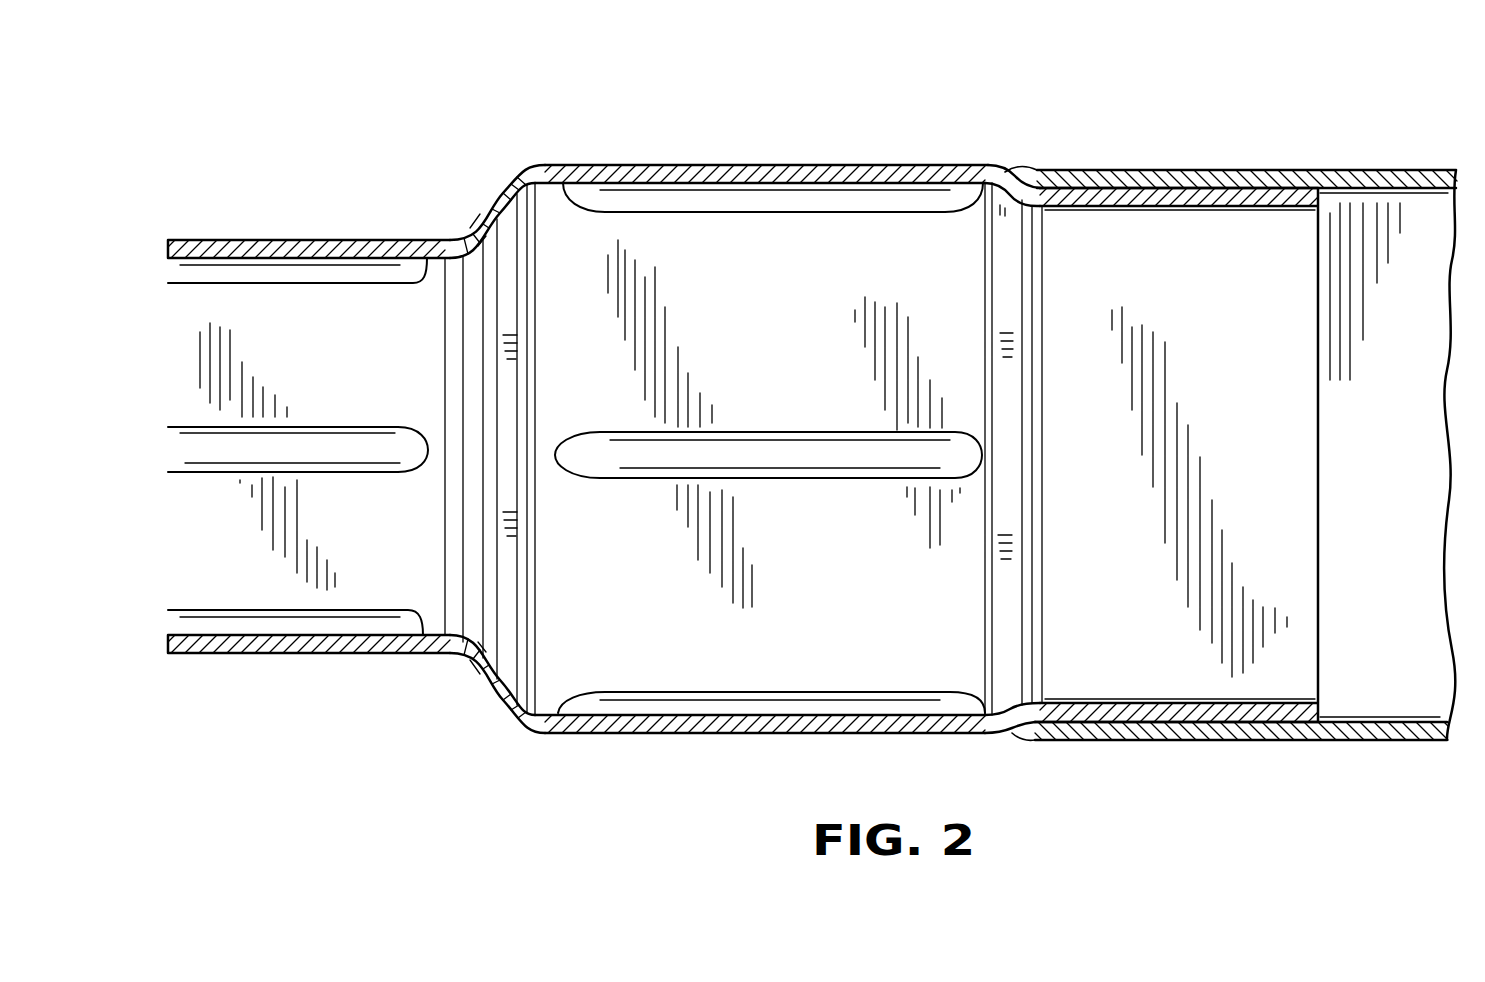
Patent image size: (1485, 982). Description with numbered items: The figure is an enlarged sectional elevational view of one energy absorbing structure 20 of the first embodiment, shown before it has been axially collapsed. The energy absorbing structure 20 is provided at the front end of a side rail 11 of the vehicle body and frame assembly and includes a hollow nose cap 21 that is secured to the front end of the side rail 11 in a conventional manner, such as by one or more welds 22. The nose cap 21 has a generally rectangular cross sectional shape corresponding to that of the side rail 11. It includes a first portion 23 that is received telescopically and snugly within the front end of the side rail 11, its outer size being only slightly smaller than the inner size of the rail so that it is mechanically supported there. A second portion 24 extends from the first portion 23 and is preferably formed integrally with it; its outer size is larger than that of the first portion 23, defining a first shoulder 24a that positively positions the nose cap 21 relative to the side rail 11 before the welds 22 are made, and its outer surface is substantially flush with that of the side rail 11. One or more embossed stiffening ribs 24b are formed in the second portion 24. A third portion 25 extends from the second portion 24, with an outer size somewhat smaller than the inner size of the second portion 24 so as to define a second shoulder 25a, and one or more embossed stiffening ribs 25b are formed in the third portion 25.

The side rail 11 is at (1383, 178).
The energy absorbing structure 20 is at (1049, 124).
The nose cap 21 is at (510, 106).
The welds 22 is at (1025, 170).
The first portion 23 is at (1227, 195).
The second portion 24 is at (767, 172).
The first shoulder 24a is at (1013, 195).
The embossed stiffening ribs 24b is at (810, 212).
The third portion 25 is at (268, 240).
The second shoulder 25a is at (492, 210).
The embossed stiffening ribs 25b is at (305, 278).